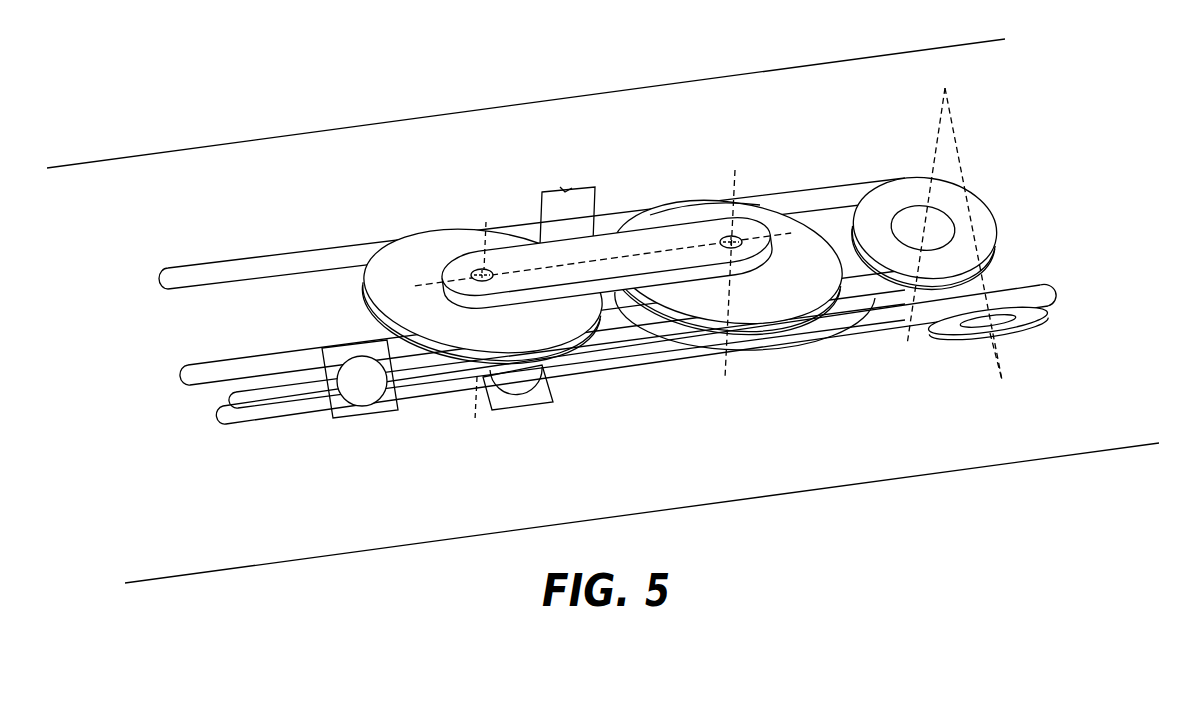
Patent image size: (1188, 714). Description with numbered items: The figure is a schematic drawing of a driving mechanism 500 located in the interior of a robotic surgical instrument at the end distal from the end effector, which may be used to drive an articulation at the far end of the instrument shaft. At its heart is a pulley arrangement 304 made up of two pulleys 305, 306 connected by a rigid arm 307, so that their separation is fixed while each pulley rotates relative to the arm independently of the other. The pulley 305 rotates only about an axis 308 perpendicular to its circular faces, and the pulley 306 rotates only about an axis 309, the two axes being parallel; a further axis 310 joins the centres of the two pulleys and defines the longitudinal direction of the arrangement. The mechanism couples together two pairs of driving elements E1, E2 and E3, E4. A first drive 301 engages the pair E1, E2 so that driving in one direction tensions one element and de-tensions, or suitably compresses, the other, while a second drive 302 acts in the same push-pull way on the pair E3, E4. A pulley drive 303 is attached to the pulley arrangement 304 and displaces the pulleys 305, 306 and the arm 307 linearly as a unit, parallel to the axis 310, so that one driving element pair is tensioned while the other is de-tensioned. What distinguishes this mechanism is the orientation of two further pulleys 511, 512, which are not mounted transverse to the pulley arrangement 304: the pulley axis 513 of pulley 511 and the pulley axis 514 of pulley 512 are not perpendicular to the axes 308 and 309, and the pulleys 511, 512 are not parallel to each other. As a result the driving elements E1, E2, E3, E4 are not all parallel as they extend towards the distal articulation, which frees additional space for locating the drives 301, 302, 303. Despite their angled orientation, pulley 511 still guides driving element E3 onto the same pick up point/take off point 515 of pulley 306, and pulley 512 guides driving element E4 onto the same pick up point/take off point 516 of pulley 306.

The driving mechanism 500 is at (340, 94).
The driving element E1 is at (181, 275).
The driving element E2 is at (277, 407).
The driving element E3 is at (207, 368).
The driving element E4 is at (222, 416).
The first drive 301 is at (350, 420).
The second drive 302 is at (492, 412).
The pulley drive 303 is at (568, 187).
The pulley arrangement 304 is at (526, 184).
The pulley 305 is at (374, 281).
The pulley 306 is at (808, 247).
The arm 307 is at (598, 270).
The axis 308 is at (478, 223).
The axis 309 is at (740, 182).
The axis 310 is at (663, 250).
The pulley 511 is at (978, 220).
The pulley 512 is at (1033, 314).
The pulley axis 513 is at (952, 125).
The pulley axis 514 is at (995, 365).
The pick up point/take off point 515 is at (699, 202).
The pick up point/take off point 516 is at (785, 321).